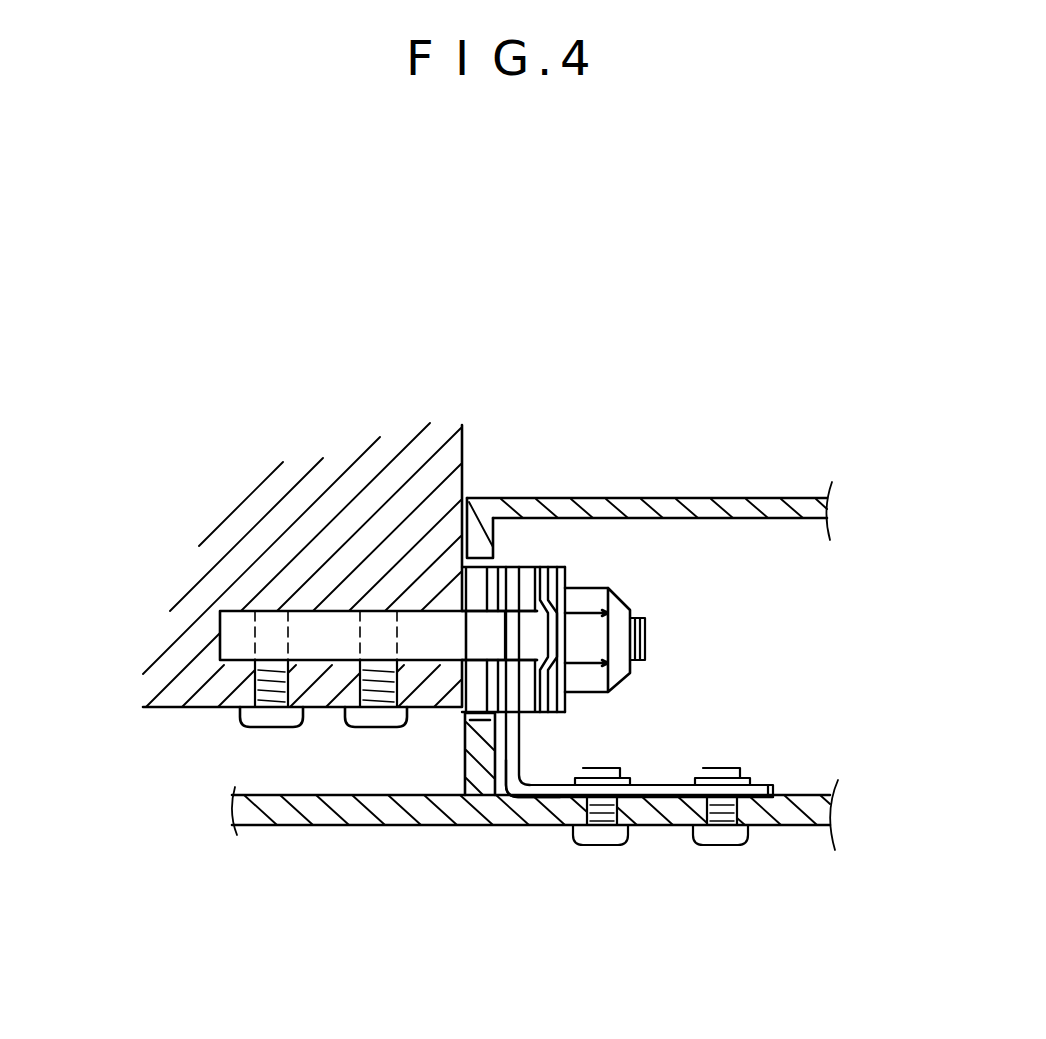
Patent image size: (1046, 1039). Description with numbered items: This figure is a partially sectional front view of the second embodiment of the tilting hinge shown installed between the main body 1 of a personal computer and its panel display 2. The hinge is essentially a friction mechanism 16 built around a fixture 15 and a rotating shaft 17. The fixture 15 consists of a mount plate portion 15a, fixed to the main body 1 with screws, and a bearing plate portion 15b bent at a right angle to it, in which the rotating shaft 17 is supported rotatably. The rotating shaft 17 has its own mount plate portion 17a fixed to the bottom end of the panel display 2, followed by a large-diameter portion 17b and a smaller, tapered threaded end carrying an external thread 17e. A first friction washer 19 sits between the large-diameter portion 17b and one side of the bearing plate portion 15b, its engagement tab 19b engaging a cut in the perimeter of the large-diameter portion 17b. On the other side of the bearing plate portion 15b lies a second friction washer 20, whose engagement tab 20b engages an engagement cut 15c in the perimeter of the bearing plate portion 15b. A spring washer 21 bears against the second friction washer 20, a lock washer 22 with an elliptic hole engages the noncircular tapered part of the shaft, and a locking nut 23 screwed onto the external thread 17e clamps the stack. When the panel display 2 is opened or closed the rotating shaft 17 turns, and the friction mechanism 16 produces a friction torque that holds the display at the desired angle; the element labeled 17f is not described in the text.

The main body 1 is at (330, 822).
The panel display 2 is at (175, 693).
The fixture 15 is at (643, 651).
The mount plate portion 15a is at (768, 798).
The bearing plate portion 15b is at (520, 567).
The engagement cut 15c is at (535, 595).
The friction mechanism 16 is at (584, 633).
The rotating shaft 17 is at (430, 540).
The mount plate portion 17a is at (228, 638).
The large-diameter portion 17b is at (461, 606).
The external thread 17e is at (645, 630).
The shoulder of bolt member 17f is at (460, 583).
The first friction washer 19 is at (493, 550).
The engagement tab 19b is at (482, 652).
The second friction washer 20 is at (548, 580).
The engagement tab 20b is at (542, 714).
The spring washer 21 is at (567, 595).
The lock washer 22 is at (558, 602).
The locking nut 23 is at (592, 677).